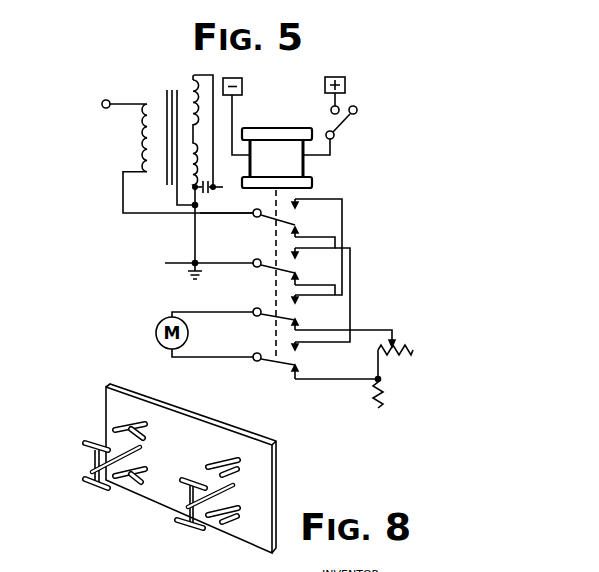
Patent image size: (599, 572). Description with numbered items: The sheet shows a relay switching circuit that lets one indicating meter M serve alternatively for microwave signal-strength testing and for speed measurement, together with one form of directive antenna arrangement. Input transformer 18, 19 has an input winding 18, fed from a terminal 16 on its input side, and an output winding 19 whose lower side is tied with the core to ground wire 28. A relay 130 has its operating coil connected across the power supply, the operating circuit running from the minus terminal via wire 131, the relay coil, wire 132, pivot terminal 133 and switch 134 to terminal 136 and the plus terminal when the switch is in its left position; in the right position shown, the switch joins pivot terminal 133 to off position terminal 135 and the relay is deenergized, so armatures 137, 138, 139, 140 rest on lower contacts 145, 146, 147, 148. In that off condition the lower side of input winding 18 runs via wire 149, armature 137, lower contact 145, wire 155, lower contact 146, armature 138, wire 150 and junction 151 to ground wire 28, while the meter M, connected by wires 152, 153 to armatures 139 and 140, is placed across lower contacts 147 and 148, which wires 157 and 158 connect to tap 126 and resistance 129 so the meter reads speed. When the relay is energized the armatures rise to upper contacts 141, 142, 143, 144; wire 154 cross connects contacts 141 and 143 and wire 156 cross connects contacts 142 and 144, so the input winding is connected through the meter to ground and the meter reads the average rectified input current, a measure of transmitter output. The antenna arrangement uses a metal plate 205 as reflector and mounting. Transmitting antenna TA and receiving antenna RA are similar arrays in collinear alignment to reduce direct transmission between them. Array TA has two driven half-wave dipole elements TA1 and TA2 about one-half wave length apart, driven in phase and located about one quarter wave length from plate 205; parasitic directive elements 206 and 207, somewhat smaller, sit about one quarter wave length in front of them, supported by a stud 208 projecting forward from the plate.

In FIG. 5, the input terminal 16 is at (102, 102).
In FIG. 5, the input winding 18 is at (148, 103).
In FIG. 5, the output winding 19 is at (190, 76).
In FIG. 5, the ground wire 28 is at (180, 266).
In FIG. 5, the tap 126 is at (394, 338).
In FIG. 5, the resistance 129 is at (390, 388).
In FIG. 5, the relay 130 is at (268, 128).
In FIG. 5, the wire 131 is at (240, 113).
In FIG. 5, the wire 132 is at (329, 158).
In FIG. 5, the pivot terminal 133 is at (337, 138).
In FIG. 5, the switch 134 is at (342, 122).
In FIG. 5, the off position terminal 135 is at (358, 110).
In FIG. 5, the terminal 136 is at (330, 108).
In FIG. 5, the armature 137 is at (268, 210).
In FIG. 5, the armature 138 is at (270, 260).
In FIG. 5, the armature 139 is at (268, 310).
In FIG. 5, the armature 140 is at (268, 356).
In FIG. 5, the upper contact 141 is at (297, 206).
In FIG. 5, the upper contact 142 is at (297, 256).
In FIG. 5, the upper contact 143 is at (297, 301).
In FIG. 5, the upper contact 144 is at (297, 348).
In FIG. 5, the lower contact 145 is at (297, 230).
In FIG. 5, the lower contact 146 is at (297, 276).
In FIG. 5, the lower contact 147 is at (297, 322).
In FIG. 5, the lower contact 148 is at (297, 368).
In FIG. 5, the wire 149 is at (239, 215).
In FIG. 5, the wire 150 is at (245, 264).
In FIG. 5, the junction 151 is at (194, 261).
In FIG. 5, the wire 152 is at (232, 314).
In FIG. 5, the wire 153 is at (232, 361).
In FIG. 5, the wire 154 is at (342, 222).
In FIG. 5, the wire 155 is at (340, 247).
In FIG. 5, the wire 156 is at (351, 286).
In FIG. 5, the wire 157 is at (360, 330).
In FIG. 5, the wire 158 is at (360, 381).
In FIG. 8, the metal plate 205 is at (280, 468).
In FIG. 8, the parasitic directive antenna element 206 is at (88, 448).
In FIG. 8, the parasitic directive antenna element 207 is at (98, 492).
In FIG. 8, the stud 208 is at (92, 473).
In FIG. 8, the transmitting antenna TA is at (85, 463).
In FIG. 8, the driven half-wave dipole antenna element TA1 is at (127, 425).
In FIG. 8, the driven half-wave dipole antenna element TA2 is at (128, 488).
In FIG. 8, the receiving antenna RA is at (213, 533).